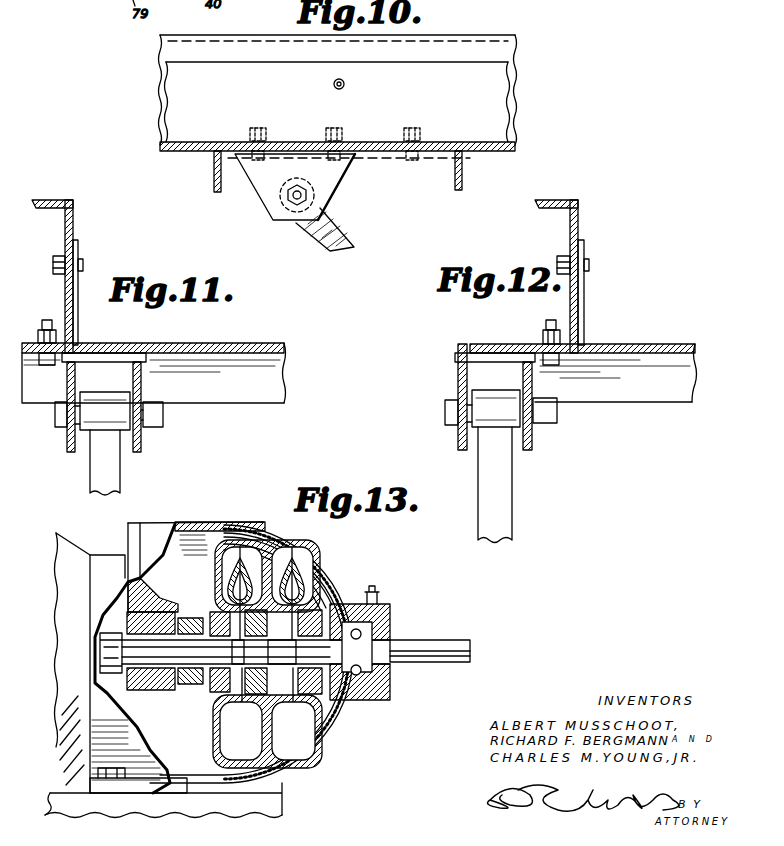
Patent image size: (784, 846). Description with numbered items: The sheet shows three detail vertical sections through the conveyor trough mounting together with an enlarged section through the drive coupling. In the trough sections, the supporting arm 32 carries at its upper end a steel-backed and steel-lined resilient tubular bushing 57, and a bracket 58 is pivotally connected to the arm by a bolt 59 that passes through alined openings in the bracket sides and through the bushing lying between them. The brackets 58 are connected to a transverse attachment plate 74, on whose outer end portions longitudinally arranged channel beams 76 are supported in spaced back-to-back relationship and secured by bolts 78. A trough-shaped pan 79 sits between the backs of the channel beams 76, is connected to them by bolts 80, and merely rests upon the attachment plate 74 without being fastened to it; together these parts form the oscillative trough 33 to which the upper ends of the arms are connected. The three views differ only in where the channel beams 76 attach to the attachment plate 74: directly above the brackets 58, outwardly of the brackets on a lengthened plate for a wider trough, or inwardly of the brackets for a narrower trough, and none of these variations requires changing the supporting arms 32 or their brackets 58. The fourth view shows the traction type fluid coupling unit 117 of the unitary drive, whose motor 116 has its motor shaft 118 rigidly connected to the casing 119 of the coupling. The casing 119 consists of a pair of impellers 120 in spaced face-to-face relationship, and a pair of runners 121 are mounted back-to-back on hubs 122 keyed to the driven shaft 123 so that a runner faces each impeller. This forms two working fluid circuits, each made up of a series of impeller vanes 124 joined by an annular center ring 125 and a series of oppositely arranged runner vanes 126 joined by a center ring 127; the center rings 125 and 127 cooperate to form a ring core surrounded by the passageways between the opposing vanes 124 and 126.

In FIG. 10, the supporting arm 32 is at (352, 238).
In FIG. 11, the supporting arm 32 is at (121, 477).
In FIG. 12, the supporting arm 32 is at (508, 503).
In FIG. 10, the oscillative trough 33 is at (156, 98).
In FIG. 11, the oscillative trough 33 is at (60, 240).
In FIG. 12, the oscillative trough 33 is at (566, 233).
In FIG. 11, the resilient tubular bushing 57 is at (128, 393).
In FIG. 12, the resilient tubular bushing 57 is at (521, 391).
In FIG. 10, the bracket 58 is at (337, 192).
In FIG. 11, the bracket 58 is at (143, 383).
In FIG. 12, the bracket 58 is at (535, 382).
In FIG. 10, the bolt 59 is at (295, 205).
In FIG. 11, the bolt 59 is at (165, 405).
In FIG. 12, the bolt 59 is at (558, 412).
In FIG. 10, the transverse attachment plate 74 is at (463, 178).
In FIG. 11, the transverse attachment plate 74 is at (285, 366).
In FIG. 12, the transverse attachment plate 74 is at (480, 348).
In FIG. 10, the channel beam 76 is at (517, 62).
In FIG. 11, the channel beam 76 is at (74, 215).
In FIG. 12, the channel beam 76 is at (579, 216).
In FIG. 10, the bolt 78 is at (263, 128).
In FIG. 11, the bolt 78 is at (44, 319).
In FIG. 12, the bolt 78 is at (551, 319).
In FIG. 10, the trough-shaped pan 79 is at (437, 68).
In FIG. 11, the trough-shaped pan 79 is at (78, 332).
In FIG. 12, the trough-shaped pan 79 is at (585, 312).
In FIG. 10, the bolt 80 is at (344, 83).
In FIG. 11, the bolt 80 is at (80, 263).
In FIG. 12, the bolt 80 is at (589, 264).
In FIG. 13, the motor 116 is at (78, 548).
In FIG. 13, the traction type fluid coupling unit 117 is at (221, 517).
In FIG. 13, the motor shaft 118 is at (95, 670).
In FIG. 13, the casing 119 is at (215, 583).
In FIG. 13, the impeller 120 is at (320, 560).
In FIG. 13, the runner 121 is at (283, 603).
In FIG. 13, the hub 122 is at (287, 647).
In FIG. 13, the driven shaft 123 is at (423, 640).
In FIG. 13, the impeller vane 124 is at (233, 712).
In FIG. 13, the annular center ring 125 is at (233, 738).
In FIG. 13, the runner vane 126 is at (287, 710).
In FIG. 13, the center ring 127 is at (287, 735).